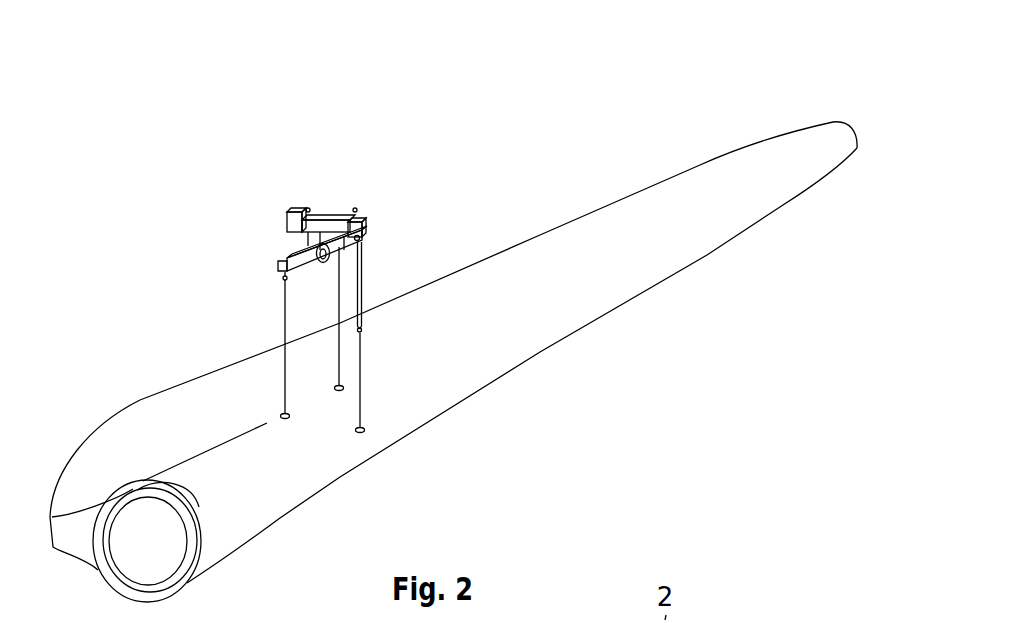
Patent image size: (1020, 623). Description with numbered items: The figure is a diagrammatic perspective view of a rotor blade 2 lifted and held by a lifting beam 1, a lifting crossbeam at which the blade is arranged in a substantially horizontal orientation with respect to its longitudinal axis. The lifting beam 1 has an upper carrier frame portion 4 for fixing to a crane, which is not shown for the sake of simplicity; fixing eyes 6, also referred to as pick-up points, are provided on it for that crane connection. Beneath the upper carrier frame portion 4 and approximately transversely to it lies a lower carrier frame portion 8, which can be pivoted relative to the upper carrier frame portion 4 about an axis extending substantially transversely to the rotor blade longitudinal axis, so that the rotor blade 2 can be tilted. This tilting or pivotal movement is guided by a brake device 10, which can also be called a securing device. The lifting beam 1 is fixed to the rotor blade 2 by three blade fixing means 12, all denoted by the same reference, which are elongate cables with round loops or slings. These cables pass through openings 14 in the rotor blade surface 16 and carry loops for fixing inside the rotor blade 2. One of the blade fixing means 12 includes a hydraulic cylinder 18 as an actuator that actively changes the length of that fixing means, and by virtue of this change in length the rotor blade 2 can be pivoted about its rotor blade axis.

The lifting beam 1 is at (357, 137).
The rotor blade 2 is at (520, 160).
The upper carrier frame portion 4 is at (325, 218).
The fixing eyes 6 is at (308, 211).
The lower carrier frame portion 8 is at (285, 243).
The brake device 10 is at (320, 262).
The blade fixing means 12 is at (338, 390).
The openings 14 is at (285, 418).
The rotor blade surface 16 is at (538, 328).
The hydraulic cylinder 18 is at (363, 300).